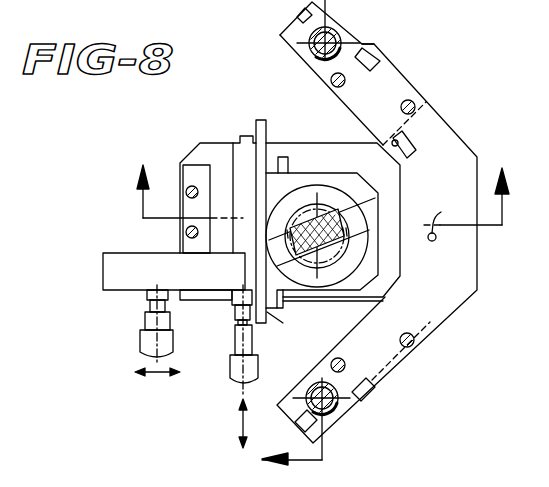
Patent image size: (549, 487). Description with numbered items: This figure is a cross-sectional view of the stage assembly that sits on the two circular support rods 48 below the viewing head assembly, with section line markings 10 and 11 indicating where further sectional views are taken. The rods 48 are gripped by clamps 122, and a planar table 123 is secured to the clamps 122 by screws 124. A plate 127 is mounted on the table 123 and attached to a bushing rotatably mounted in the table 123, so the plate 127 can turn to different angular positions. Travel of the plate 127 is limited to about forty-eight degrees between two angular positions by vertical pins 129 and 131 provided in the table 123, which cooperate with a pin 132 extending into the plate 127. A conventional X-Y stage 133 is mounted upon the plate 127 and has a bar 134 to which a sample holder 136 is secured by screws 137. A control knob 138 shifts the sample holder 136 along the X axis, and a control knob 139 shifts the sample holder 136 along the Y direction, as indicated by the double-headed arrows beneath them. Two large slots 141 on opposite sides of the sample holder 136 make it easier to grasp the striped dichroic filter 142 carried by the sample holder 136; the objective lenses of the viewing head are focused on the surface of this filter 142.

The section line 10- 10 is at (286, 243).
The section line 11- 11 is at (325, 186).
The support rods 48 is at (309, 47).
The clamps 122 is at (340, 22).
The table 123 is at (448, 133).
The screws 124 is at (412, 101).
The plate 127 is at (200, 145).
The vertical pin 129 is at (440, 102).
The vertical pin 131 is at (447, 219).
The pin 132 is at (410, 154).
The X-Y stage 133 is at (240, 246).
The bar 134 is at (262, 121).
The sample holder 136 is at (383, 297).
The screws 137 is at (288, 167).
The control knob 138 is at (140, 340).
The control knob 139 is at (231, 360).
The slots 141 is at (283, 218).
The striped dichroic filter 142 is at (331, 212).